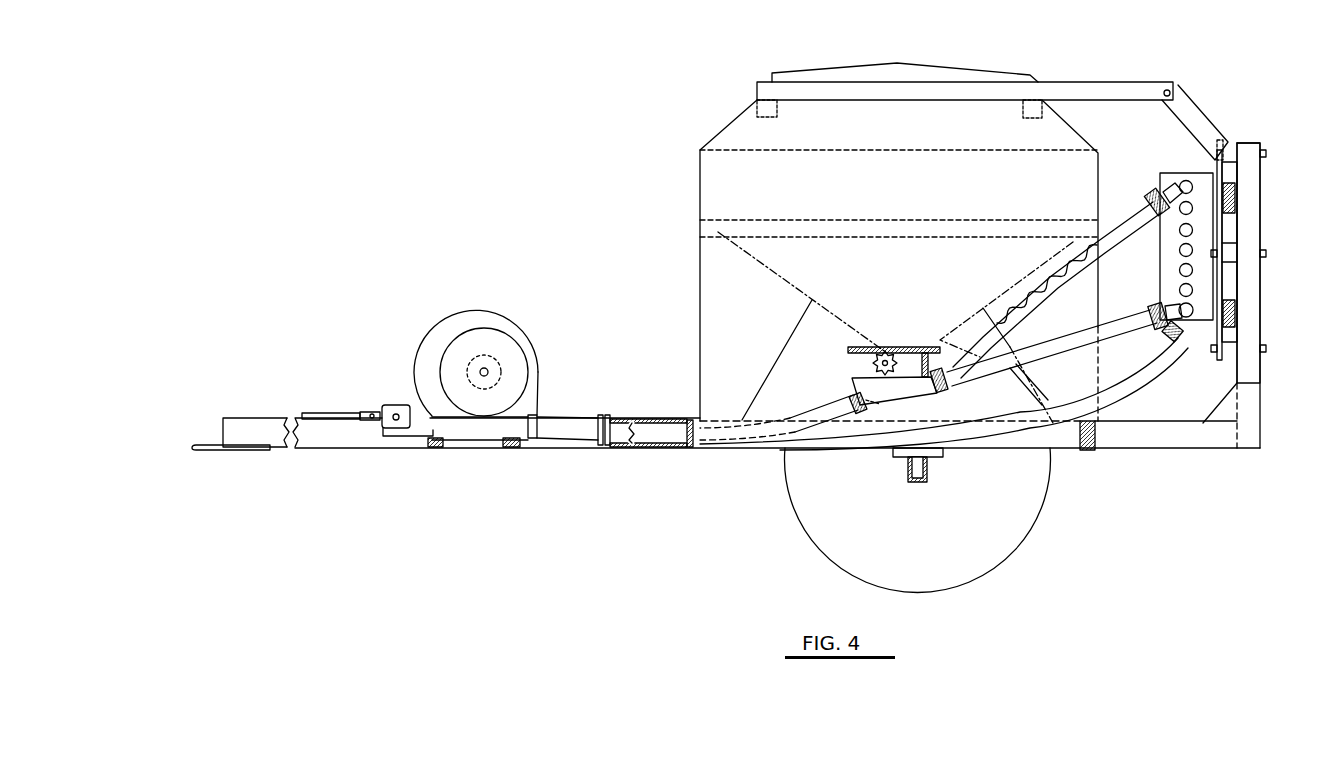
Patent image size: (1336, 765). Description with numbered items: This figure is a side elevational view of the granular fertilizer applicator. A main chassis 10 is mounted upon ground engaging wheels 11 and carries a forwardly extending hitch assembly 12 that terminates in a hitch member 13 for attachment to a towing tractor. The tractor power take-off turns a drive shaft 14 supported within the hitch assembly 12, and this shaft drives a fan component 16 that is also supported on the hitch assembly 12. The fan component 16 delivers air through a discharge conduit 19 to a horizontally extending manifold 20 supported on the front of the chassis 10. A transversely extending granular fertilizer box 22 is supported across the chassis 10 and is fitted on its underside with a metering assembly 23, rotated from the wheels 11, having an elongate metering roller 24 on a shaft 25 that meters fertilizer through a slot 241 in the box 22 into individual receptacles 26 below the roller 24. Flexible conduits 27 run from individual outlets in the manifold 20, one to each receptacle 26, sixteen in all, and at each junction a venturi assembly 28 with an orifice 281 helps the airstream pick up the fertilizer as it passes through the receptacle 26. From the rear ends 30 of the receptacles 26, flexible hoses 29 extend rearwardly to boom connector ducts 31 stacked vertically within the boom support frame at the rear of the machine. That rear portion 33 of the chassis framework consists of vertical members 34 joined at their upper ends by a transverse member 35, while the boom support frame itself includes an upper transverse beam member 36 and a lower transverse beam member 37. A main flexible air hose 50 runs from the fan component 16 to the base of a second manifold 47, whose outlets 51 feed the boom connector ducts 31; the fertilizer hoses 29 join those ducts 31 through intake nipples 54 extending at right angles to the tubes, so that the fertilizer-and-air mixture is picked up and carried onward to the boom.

The main chassis 10 is at (1120, 452).
The ground engaging wheels 11 is at (1008, 528).
The hitch assembly 12 is at (252, 422).
The hitch member 13 is at (218, 448).
The drive shaft 14 is at (346, 412).
The fan component 16 is at (535, 360).
The discharge conduit 19 is at (573, 436).
The manifold 20 is at (657, 422).
The granular fertilizer box 22 is at (735, 140).
The metering assembly 23 is at (862, 364).
The metering roller 24 is at (884, 352).
The slot 241 is at (888, 350).
The shaft 25 is at (893, 356).
The receptacles 26 is at (902, 392).
The flexible conduits 27 is at (822, 418).
The venturi assembly 28 is at (850, 397).
The orifice 281 is at (880, 404).
The flexible hose 29 is at (1148, 212).
The rear ends 30 is at (955, 390).
The boom connector ducts 31 is at (1190, 183).
The rear portion 33 is at (1265, 155).
The vertical members 34 is at (1257, 235).
The transverse member 35 is at (1226, 150).
The upper transverse beam member 36 is at (1235, 178).
The lower transverse beam member 37 is at (1240, 300).
The second manifold 47 is at (1170, 283).
The main flexible air hose 50 is at (1130, 370).
The outlets 51 is at (1180, 250).
The intake nipples 54 is at (1160, 195).